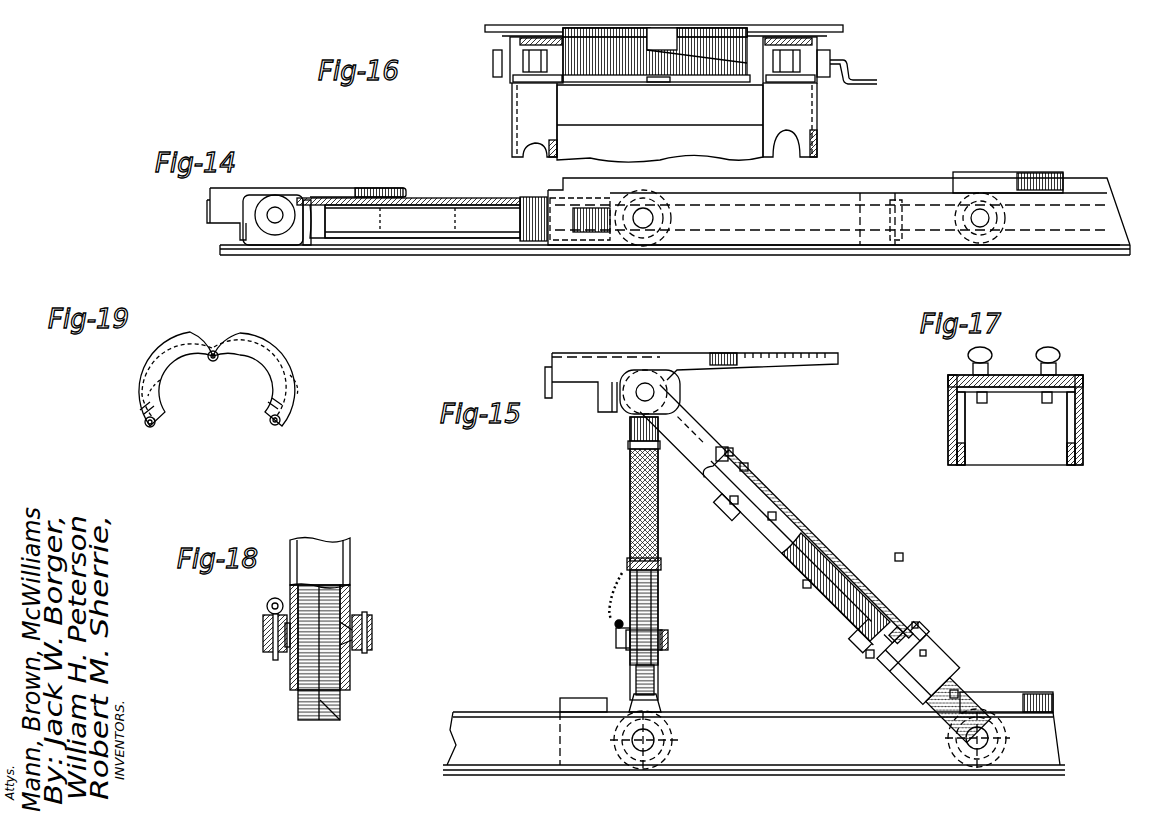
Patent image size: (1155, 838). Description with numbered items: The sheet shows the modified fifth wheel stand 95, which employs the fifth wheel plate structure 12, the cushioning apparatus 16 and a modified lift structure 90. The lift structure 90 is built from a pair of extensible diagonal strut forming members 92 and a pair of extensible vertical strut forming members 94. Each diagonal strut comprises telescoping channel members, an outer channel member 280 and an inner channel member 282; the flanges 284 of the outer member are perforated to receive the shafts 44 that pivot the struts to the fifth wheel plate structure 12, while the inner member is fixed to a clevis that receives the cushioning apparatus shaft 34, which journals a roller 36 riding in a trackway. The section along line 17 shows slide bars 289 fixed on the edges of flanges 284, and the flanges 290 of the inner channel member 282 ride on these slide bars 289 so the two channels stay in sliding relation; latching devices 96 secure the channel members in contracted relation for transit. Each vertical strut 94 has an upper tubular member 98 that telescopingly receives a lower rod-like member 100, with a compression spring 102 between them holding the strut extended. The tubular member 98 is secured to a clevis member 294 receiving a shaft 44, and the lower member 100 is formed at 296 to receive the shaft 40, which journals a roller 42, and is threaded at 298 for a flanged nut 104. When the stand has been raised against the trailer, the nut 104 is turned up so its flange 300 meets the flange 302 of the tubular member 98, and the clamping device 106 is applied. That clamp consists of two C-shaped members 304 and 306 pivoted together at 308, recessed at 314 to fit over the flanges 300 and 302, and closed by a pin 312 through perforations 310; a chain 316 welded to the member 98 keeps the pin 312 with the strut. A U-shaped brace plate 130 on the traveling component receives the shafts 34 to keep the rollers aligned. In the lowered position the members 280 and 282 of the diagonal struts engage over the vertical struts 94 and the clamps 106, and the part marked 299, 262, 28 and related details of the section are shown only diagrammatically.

In FIG. 14, the fifth wheel plate structure 12 is at (305, 184).
In FIG. 15, the fifth wheel plate structure 12 is at (620, 346).
In FIG. 15, the cushioning apparatus 16 is at (780, 712).
In FIG. 15, the section line 17— 17 is at (857, 673).
In FIG. 15, the wheel 28 is at (1000, 740).
In FIG. 15, the shaft 34 is at (975, 740).
In FIG. 15, the roller 36 is at (1003, 753).
In FIG. 15, the shaft 40 is at (657, 742).
In FIG. 15, the roller 42 is at (662, 758).
In FIG. 16, the shaft 44 is at (493, 65).
In FIG. 15, the shaft 44 is at (647, 388).
In FIG. 16, the lift structure 90 is at (508, 112).
In FIG. 15, the lift structure 90 is at (776, 492).
In FIG. 17, the extensible diagonal strut forming member 92 is at (945, 405).
In FIG. 14, the extensible vertical strut forming member 94 is at (467, 192).
In FIG. 15, the extensible vertical strut forming member 94 is at (626, 506).
In FIG. 15, the stand 95 is at (902, 557).
In FIG. 17, the latching device 96 is at (964, 358).
In FIG. 14, the upper tubular member 98 is at (478, 222).
In FIG. 18, the upper tubular member 98 is at (350, 575).
In FIG. 15, the upper tubular member 98 is at (629, 468).
In FIG. 14, the lower member 100 is at (535, 232).
In FIG. 18, the lower member 100 is at (342, 703).
In FIG. 15, the lower member 100 is at (656, 681).
In FIG. 15, the compression spring 102 is at (632, 562).
In FIG. 14, the flanged nut 104 is at (563, 225).
In FIG. 18, the flanged nut 104 is at (350, 678).
In FIG. 15, the flanged nut 104 is at (630, 657).
In FIG. 19, the clamping device 106 is at (196, 326).
In FIG. 18, the clamping device 106 is at (258, 643).
In FIG. 15, the clamping device 106 is at (670, 632).
In FIG. 14, the brace plate 130 is at (973, 180).
In FIG. 15, the brace plate 130 is at (1043, 693).
In FIG. 15, the spring 262 is at (853, 575).
In FIG. 16, the outer channel member 280 is at (540, 110).
In FIG. 17, the outer channel member 280 is at (1083, 398).
In FIG. 17, the inner channel member 282 is at (960, 417).
In FIG. 17, the flange 284 is at (1079, 428).
In FIG. 15, the flange 284 is at (771, 510).
In FIG. 17, the slide bar 289 is at (957, 465).
In FIG. 15, the slide bar 289 is at (807, 586).
In FIG. 17, the flange 290 is at (1067, 422).
In FIG. 16, the clevis member 294 is at (532, 60).
In FIG. 15, the clevis member 294 is at (631, 424).
In FIG. 15, the formed portion 296 is at (630, 741).
In FIG. 18, the threaded portion 298 is at (312, 675).
In FIG. 15, the threaded portion 298 is at (655, 693).
In FIG. 17, the lip 299 is at (967, 433).
In FIG. 18, the flange 300 is at (357, 653).
In FIG. 18, the flange 302 is at (366, 614).
In FIG. 19, the C-shaped member 304 is at (150, 347).
In FIG. 19, the C-shaped member 306 is at (275, 337).
In FIG. 19, the pivot 308 is at (210, 362).
In FIG. 19, the perforation 310 is at (160, 427).
In FIG. 15, the pin 312 is at (612, 628).
In FIG. 19, the recess 314 is at (292, 367).
In FIG. 15, the chain 316 is at (618, 590).